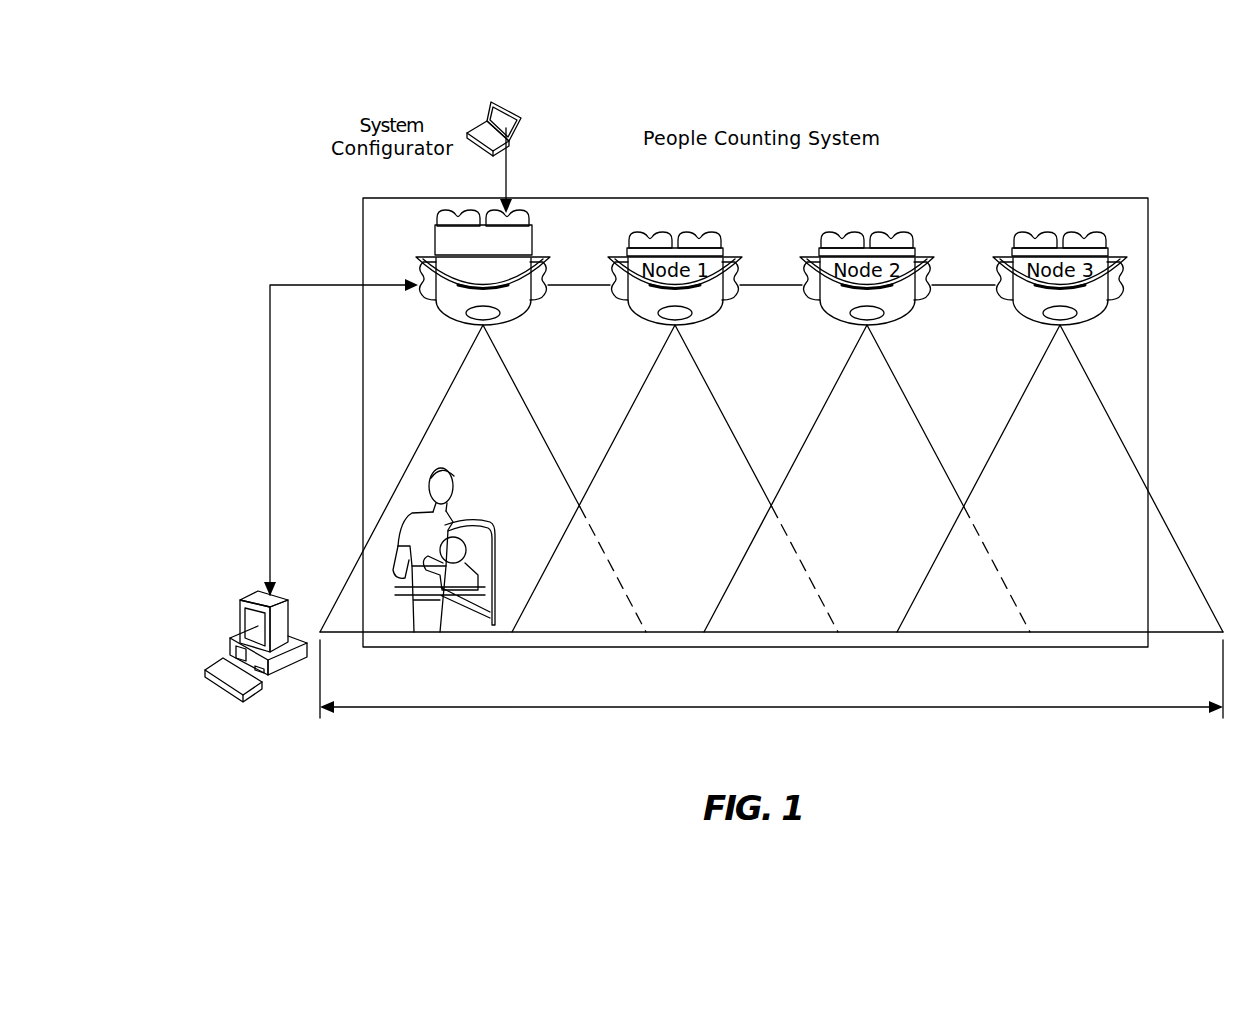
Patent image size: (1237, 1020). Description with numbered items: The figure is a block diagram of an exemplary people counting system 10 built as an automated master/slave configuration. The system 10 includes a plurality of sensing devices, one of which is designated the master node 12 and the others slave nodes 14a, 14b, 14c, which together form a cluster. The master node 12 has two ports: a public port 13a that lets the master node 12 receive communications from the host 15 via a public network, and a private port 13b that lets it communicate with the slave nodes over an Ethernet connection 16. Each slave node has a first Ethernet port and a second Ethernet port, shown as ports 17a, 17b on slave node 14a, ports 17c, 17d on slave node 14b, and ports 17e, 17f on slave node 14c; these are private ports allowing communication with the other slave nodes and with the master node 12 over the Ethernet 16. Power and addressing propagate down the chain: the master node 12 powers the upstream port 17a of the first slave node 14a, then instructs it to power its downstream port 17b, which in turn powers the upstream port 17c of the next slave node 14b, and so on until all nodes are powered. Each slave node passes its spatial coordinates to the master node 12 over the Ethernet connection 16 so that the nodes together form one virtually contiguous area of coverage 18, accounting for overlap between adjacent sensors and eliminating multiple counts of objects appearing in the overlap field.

The people counting system 10 is at (262, 200).
The master node 12 is at (531, 243).
The public port 13a is at (425, 302).
The private port 13b is at (541, 302).
The slave node 14a is at (703, 318).
The slave node 14b is at (900, 318).
The slave node 14c is at (1037, 315).
The host 15 is at (240, 627).
The Ethernet connection 16 is at (970, 285).
The first Ethernet port 17a is at (618, 303).
The second Ethernet port 17b is at (736, 303).
The upstream port 17c is at (812, 303).
The Ethernet port 17d is at (928, 303).
The Ethernet port 17e is at (1008, 303).
The Ethernet port 17f is at (1118, 303).
The area of coverage 18 is at (815, 707).